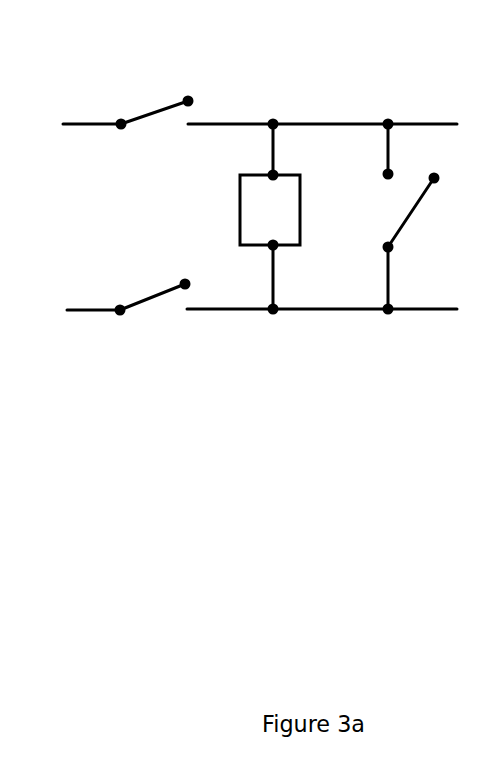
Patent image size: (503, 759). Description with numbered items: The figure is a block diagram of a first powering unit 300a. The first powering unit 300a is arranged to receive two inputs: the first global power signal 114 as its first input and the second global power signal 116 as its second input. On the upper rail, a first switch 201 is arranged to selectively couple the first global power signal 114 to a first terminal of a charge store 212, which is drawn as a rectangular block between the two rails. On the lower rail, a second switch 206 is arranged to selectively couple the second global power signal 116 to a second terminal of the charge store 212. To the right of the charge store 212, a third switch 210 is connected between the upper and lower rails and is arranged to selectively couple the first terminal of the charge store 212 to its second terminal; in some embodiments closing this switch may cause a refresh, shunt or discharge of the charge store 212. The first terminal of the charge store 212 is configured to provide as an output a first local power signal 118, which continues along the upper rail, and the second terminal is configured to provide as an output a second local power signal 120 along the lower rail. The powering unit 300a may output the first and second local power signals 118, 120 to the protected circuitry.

The first global power signal 114 is at (83, 116).
The first switch 201 is at (154, 101).
The first local power signal 118 is at (406, 109).
The charge store 212 is at (226, 220).
The third switch 210 is at (436, 204).
The second global power signal 116 is at (82, 317).
The second switch 206 is at (161, 322).
The second local power signal 120 is at (446, 315).
The first powering unit 300a is at (266, 345).